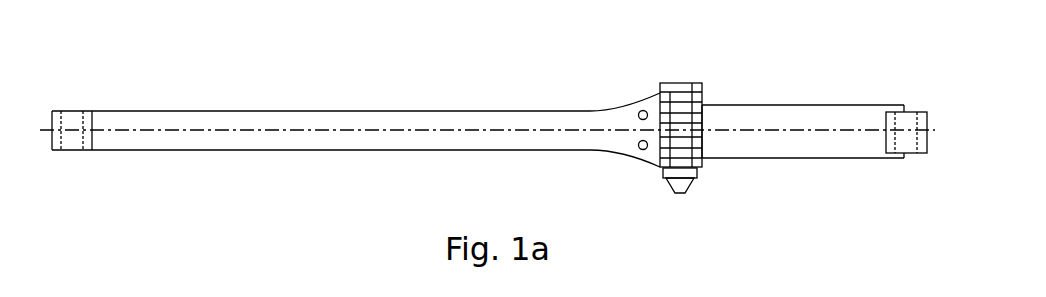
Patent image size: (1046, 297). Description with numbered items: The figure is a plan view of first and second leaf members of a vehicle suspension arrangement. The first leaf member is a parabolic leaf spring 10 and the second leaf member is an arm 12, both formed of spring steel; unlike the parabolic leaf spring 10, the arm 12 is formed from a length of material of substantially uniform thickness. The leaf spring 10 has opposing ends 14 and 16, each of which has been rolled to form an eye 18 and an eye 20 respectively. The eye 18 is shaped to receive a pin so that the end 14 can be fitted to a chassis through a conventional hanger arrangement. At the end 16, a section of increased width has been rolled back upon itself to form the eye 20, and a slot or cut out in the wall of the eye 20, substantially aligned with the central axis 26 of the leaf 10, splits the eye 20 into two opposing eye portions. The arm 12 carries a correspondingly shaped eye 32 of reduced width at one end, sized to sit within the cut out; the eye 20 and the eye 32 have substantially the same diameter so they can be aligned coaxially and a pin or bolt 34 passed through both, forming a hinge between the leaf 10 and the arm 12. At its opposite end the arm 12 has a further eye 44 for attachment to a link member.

The parabolic leaf spring 10 is at (342, 142).
The arm 12 is at (815, 145).
The end 14 is at (55, 111).
The end 16 is at (703, 125).
The eye 18 is at (78, 115).
The eye 20 is at (680, 100).
The central axis 26 is at (429, 130).
The eye 32 is at (670, 133).
The pin or bolt 34 is at (680, 193).
The further eye 44 is at (905, 118).